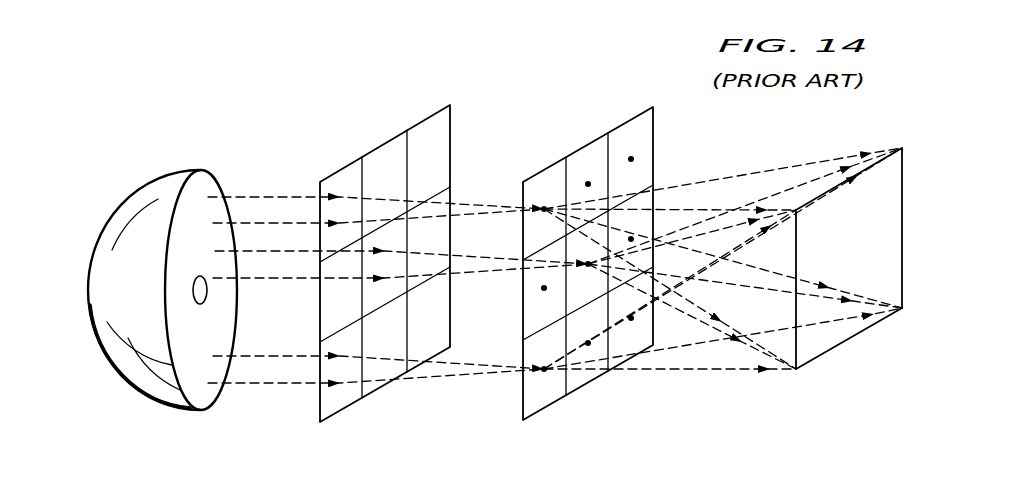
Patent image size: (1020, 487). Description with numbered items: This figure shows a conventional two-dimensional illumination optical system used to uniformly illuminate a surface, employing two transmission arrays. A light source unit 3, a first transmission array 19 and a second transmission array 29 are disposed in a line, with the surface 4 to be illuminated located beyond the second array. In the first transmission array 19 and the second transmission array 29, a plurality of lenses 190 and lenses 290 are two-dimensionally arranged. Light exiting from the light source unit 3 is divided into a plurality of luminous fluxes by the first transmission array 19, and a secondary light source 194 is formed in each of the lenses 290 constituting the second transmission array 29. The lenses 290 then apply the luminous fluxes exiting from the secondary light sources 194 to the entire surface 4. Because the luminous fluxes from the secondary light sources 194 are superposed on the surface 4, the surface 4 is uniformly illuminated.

The light source unit 3 is at (150, 156).
The first transmission array 19 is at (385, 264).
The lens 190 is at (387, 157).
The second transmission array 29 is at (597, 256).
The lens 290 is at (592, 155).
The secondary light source 194 is at (544, 374).
The surface to be illuminated 4 is at (863, 354).